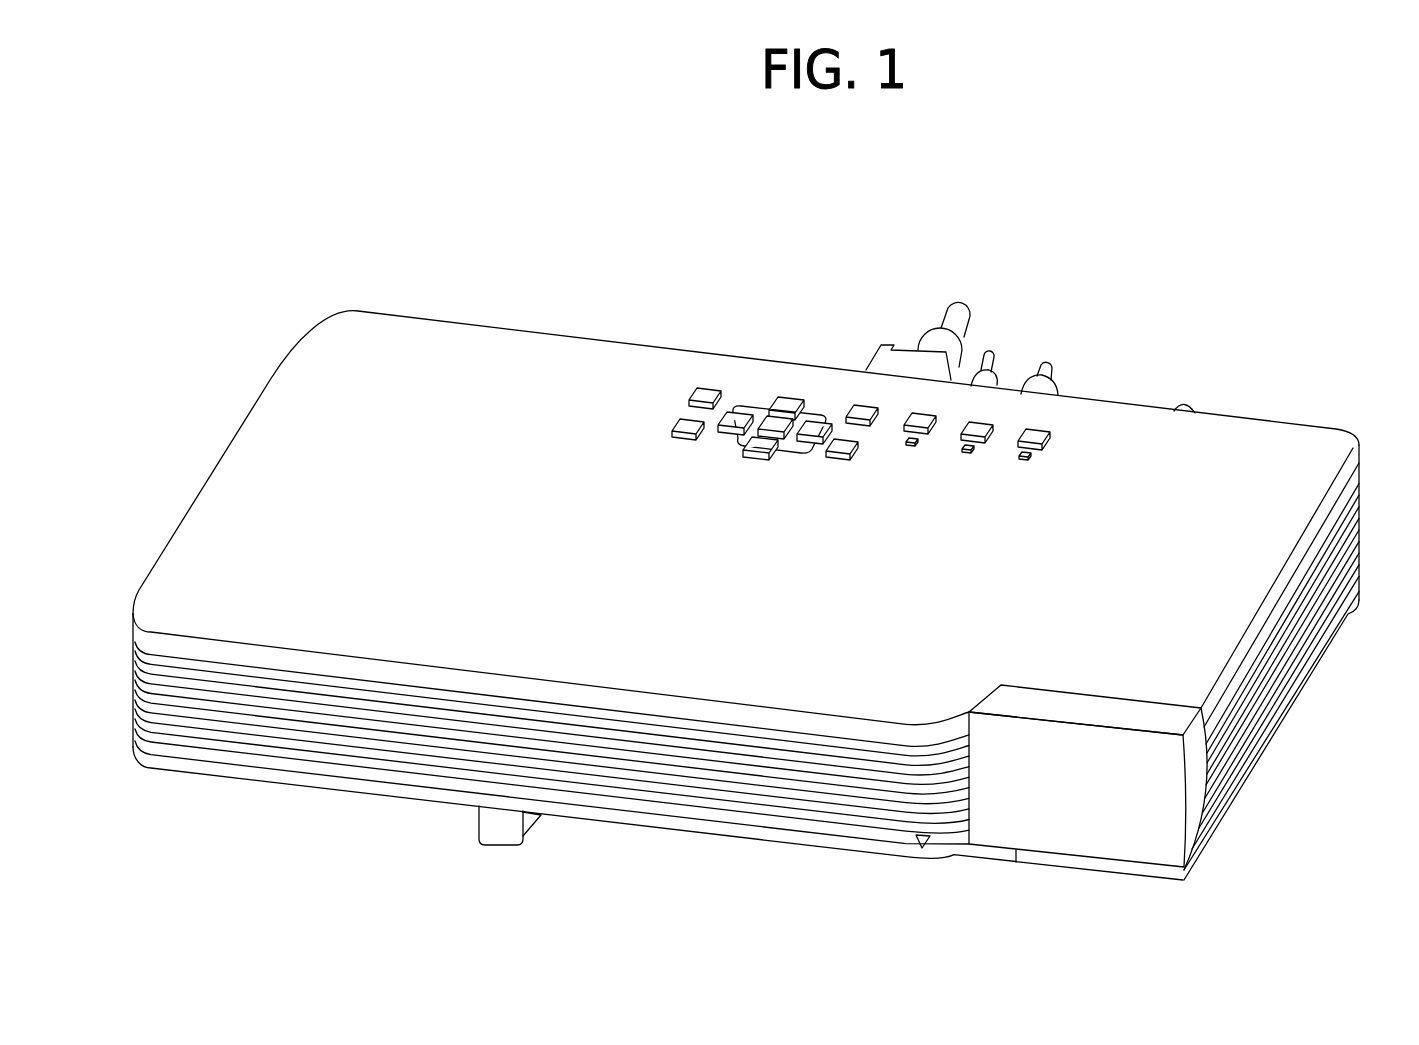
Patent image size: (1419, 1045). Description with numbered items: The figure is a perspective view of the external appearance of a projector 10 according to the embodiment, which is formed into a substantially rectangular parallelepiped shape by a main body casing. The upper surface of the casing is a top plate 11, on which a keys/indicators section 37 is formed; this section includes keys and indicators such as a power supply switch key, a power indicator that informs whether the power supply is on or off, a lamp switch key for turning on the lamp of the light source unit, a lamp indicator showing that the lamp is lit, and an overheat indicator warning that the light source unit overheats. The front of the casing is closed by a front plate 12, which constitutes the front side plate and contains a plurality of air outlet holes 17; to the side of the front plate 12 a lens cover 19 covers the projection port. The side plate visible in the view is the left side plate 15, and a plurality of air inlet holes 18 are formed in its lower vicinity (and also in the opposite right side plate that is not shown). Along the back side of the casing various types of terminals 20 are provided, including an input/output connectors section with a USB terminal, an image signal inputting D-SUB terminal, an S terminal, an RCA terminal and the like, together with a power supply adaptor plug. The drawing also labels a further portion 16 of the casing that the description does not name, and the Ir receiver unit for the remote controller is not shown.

The projector 10 is at (696, 290).
The top plate 11 is at (487, 356).
The front plate 12 is at (616, 797).
The left side plate 15 is at (1270, 699).
The bottom case (base) 16 is at (1225, 787).
The air outlet holes 17 is at (728, 819).
The air inlet holes 18 is at (1303, 609).
The lens cover 19 is at (1100, 822).
The terminals 20 is at (989, 318).
The keys/indicators section 37 is at (795, 356).